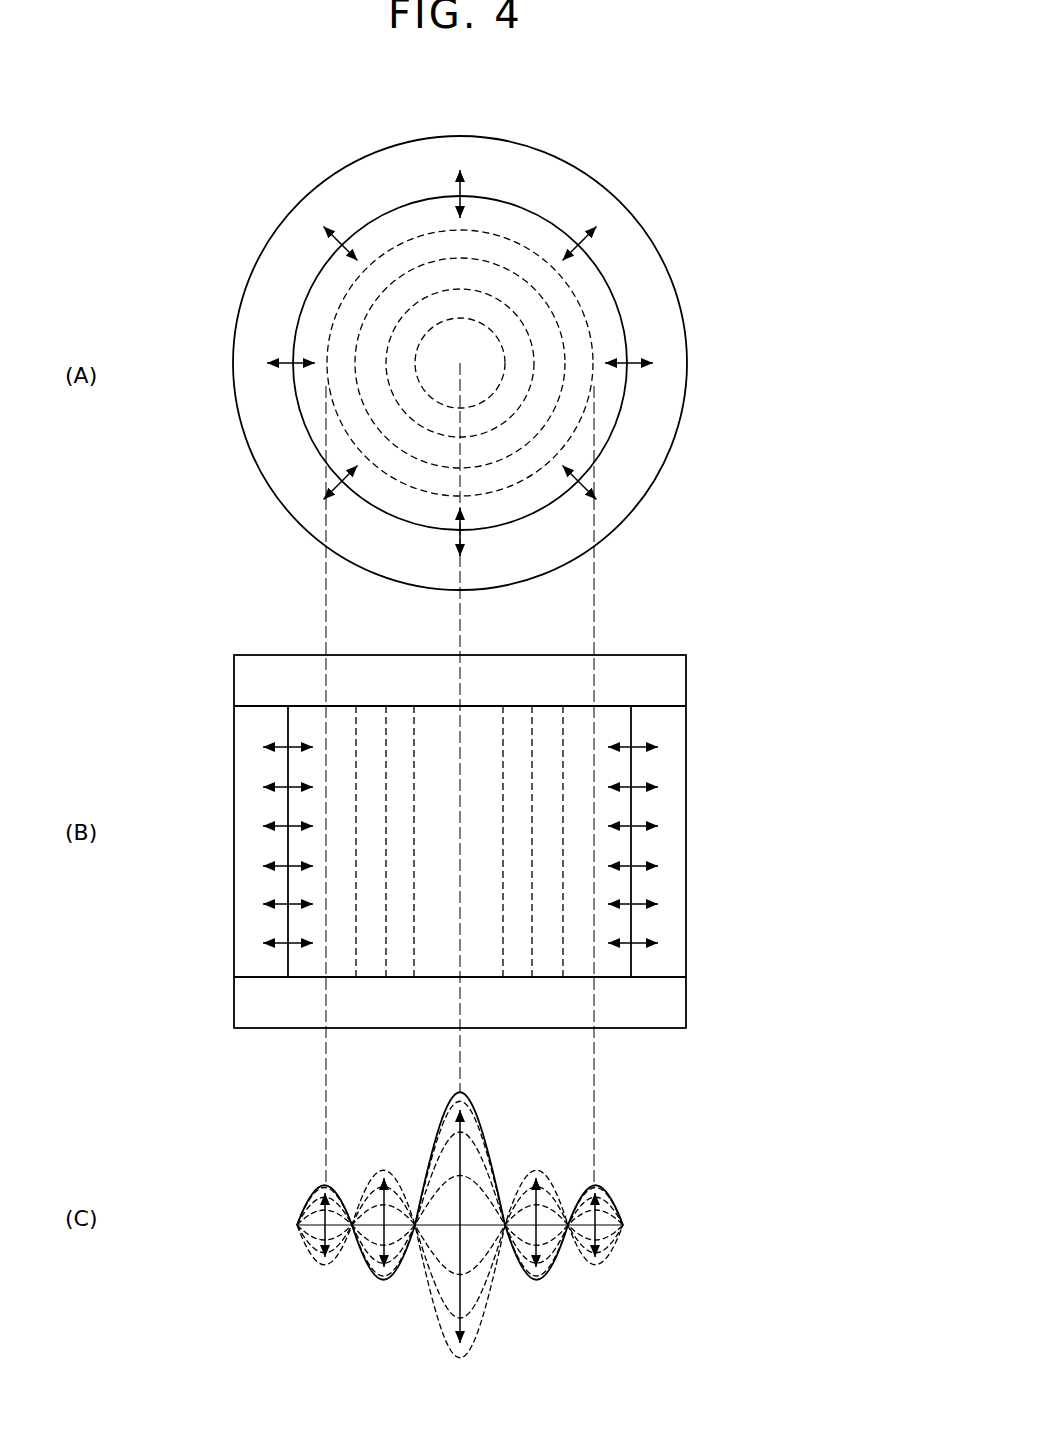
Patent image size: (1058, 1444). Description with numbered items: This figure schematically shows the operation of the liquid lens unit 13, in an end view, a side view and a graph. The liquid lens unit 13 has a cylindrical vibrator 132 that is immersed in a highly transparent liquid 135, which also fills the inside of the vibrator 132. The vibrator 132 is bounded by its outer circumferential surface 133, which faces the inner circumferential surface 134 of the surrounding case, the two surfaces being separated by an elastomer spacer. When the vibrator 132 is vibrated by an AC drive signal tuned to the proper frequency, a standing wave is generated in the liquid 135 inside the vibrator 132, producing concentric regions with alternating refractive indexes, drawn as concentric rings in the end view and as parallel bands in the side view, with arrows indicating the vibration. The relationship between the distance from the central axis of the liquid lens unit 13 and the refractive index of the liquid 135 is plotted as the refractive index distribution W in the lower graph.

The liquid lens unit 13 is at (252, 188).
The vibrator 132 is at (522, 180).
The outer circumferential surface 133 is at (577, 168).
The inner circumferential surface 134 is at (537, 224).
The liquid 135 is at (543, 327).
The refractive index distribution W is at (322, 1183).